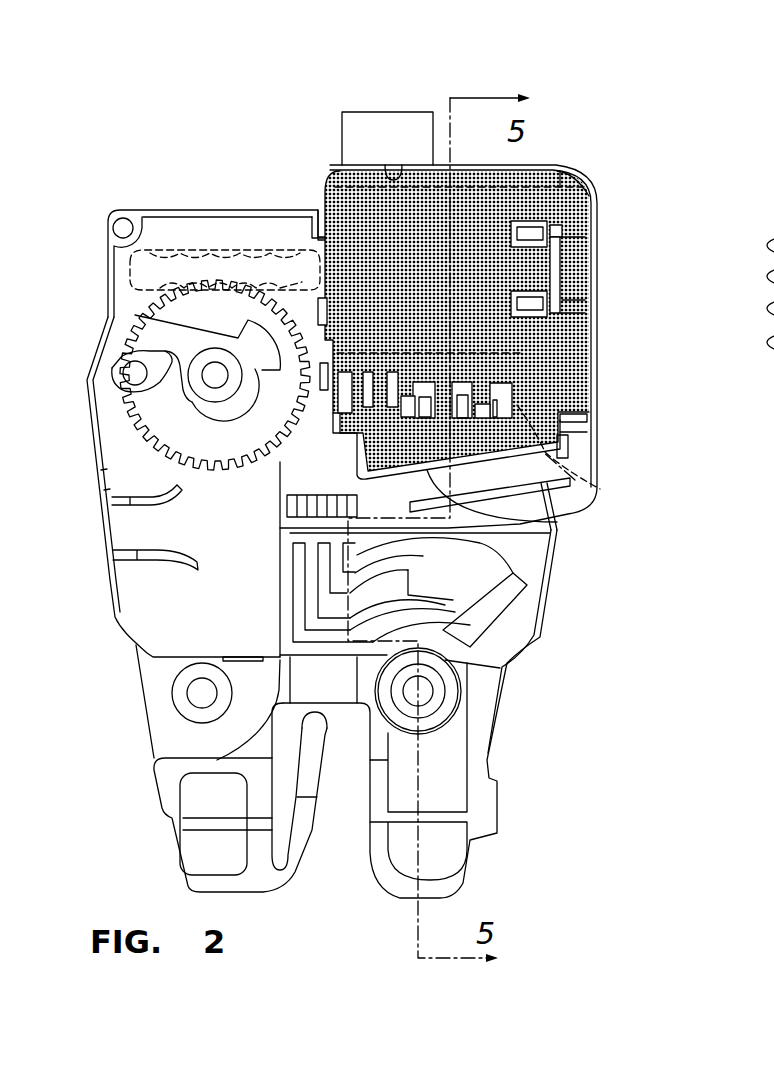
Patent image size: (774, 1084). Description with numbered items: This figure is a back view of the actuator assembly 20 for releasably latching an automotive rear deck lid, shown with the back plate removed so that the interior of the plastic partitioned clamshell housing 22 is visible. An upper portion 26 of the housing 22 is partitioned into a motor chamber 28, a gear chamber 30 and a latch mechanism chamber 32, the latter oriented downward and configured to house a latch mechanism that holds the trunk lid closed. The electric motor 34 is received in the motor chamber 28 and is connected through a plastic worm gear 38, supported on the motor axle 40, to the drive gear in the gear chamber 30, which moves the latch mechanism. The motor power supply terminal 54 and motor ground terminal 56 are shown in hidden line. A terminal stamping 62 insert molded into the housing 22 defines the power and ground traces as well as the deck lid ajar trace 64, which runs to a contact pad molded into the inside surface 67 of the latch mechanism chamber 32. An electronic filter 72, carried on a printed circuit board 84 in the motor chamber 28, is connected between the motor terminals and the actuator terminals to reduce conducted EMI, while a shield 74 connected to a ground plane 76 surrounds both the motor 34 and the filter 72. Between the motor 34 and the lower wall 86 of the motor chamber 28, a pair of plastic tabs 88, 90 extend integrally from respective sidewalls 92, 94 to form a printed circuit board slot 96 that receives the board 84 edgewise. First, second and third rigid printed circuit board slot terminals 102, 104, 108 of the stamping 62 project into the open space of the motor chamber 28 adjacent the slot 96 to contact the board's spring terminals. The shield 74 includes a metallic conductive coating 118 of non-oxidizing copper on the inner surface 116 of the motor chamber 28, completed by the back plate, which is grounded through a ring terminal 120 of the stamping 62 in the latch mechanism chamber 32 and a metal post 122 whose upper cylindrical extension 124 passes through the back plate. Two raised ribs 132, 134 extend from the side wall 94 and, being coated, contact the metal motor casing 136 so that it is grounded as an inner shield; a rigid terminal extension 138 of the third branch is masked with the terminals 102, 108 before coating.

The actuator assembly 20 is at (95, 203).
The clamshell housing 22 is at (128, 646).
The upper portion 26 is at (135, 470).
The motor chamber 28 is at (513, 205).
The gear chamber 30 is at (177, 230).
The latch mechanism chamber 32 is at (253, 762).
The electric motor 34 is at (336, 178).
The worm gear 38 is at (213, 265).
The motor axle 40 is at (144, 264).
The motor power supply terminal 54 is at (582, 163).
The motor ground terminal 56 is at (600, 314).
The terminal stamping 62 is at (472, 587).
The deck lid ajar trace 64 is at (338, 602).
The inside surface 67 is at (528, 600).
The electronic filter 72 is at (602, 473).
The shield 74 is at (543, 192).
The ground plane 76 is at (678, 113).
The printed circuit board 84 is at (600, 492).
The lower wall 86 is at (520, 525).
The plastic tab 88 is at (335, 412).
The plastic tab 90 is at (587, 417).
The sidewall 92 is at (338, 427).
The sidewall 94 is at (545, 300).
The printed circuit board slot 96 is at (580, 430).
The first printed circuit board slot terminal 102 is at (430, 380).
The second printed circuit board slot terminal 104 is at (467, 380).
The third printed circuit board slot terminal 108 is at (507, 380).
The inner surface 116 is at (390, 178).
The metallic conductive coating 118 is at (543, 192).
The ring terminal 120 is at (445, 692).
The metal post 122 is at (430, 704).
The upper cylindrical extension 124 is at (414, 700).
The raised rib 132 is at (568, 233).
The raised rib 134 is at (568, 302).
The metal motor casing 136 is at (600, 241).
The rigid terminal extension 138 is at (535, 235).